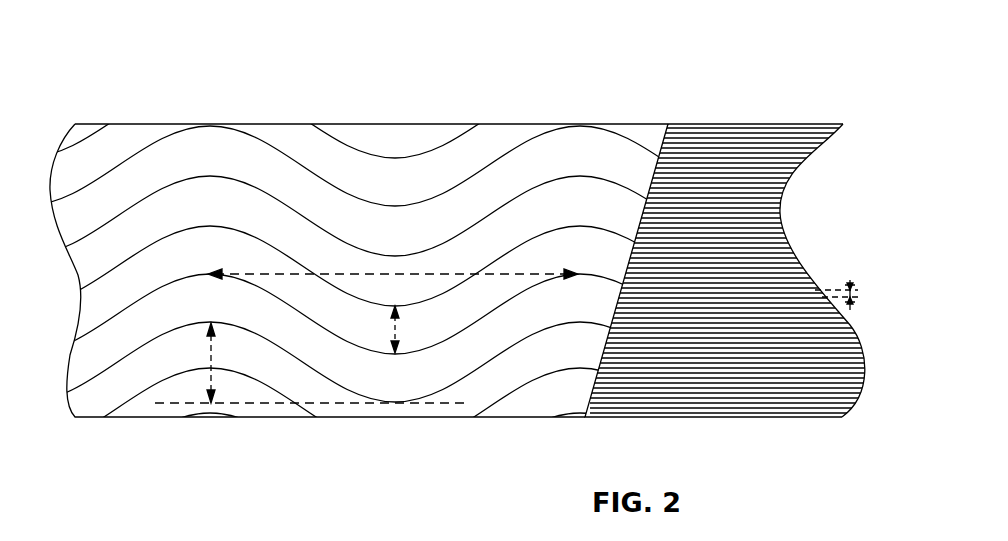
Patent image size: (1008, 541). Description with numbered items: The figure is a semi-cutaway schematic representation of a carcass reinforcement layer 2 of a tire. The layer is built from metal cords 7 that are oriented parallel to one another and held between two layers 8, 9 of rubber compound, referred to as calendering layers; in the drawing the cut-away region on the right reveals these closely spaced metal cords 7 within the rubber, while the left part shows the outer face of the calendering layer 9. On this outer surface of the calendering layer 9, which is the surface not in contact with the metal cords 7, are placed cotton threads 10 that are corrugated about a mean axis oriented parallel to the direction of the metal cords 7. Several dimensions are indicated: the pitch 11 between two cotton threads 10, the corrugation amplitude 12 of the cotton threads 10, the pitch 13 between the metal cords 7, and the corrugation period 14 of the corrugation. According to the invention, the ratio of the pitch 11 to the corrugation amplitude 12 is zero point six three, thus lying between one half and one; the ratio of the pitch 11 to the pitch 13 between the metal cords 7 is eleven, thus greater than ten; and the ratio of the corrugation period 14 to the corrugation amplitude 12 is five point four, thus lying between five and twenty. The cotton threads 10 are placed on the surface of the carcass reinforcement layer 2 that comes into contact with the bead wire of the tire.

The carcass reinforcement layer 2 is at (456, 72).
The metal cords 7 is at (782, 238).
The calendering layer 8 is at (775, 135).
The calendering layer 9 is at (603, 155).
The cotton threads 10 is at (153, 145).
The pitch between two cotton threads 11 is at (396, 328).
The corrugation amplitude 12 is at (210, 376).
The pitch between the metal cords 13 is at (856, 296).
The corrugation period 14 is at (285, 270).